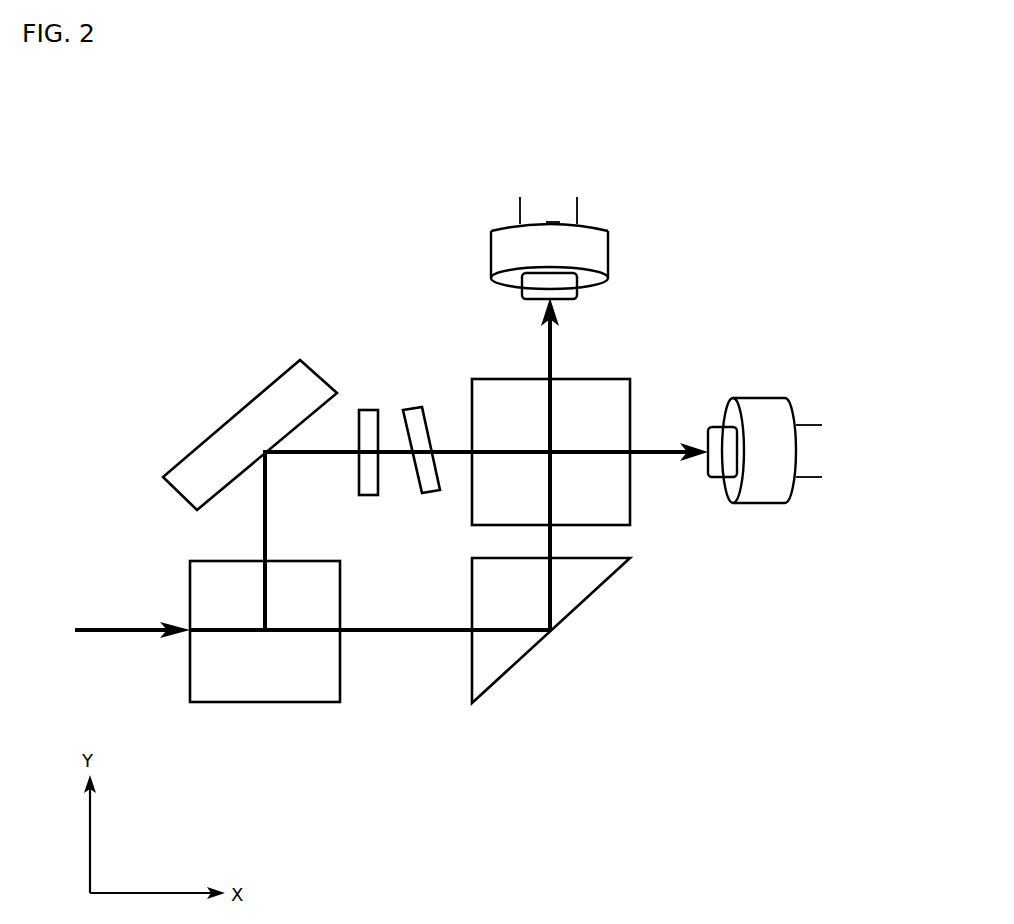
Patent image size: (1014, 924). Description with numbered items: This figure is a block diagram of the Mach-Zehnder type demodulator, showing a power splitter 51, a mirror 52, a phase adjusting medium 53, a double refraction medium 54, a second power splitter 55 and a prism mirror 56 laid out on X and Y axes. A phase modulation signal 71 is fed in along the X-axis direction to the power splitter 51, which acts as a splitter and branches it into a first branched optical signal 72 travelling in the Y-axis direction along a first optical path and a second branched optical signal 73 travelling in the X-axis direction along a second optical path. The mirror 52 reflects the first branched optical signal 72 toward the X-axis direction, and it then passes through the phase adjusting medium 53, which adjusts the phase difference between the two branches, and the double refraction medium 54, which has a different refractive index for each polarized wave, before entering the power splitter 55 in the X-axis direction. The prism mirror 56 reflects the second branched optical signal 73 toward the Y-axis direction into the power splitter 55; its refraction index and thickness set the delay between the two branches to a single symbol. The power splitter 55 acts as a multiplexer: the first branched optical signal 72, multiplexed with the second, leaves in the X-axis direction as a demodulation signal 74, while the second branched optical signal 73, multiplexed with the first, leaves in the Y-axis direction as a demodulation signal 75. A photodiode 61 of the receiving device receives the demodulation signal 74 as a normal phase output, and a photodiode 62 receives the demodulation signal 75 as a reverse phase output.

The power splitter 51 is at (189, 580).
The mirror 52 is at (226, 418).
The phase adjusting medium 53 is at (370, 410).
The double refraction medium 54 is at (428, 412).
The power splitter 55 is at (605, 379).
The prism mirror 56 is at (573, 612).
The photodiode 61 is at (762, 503).
The photodiode 62 is at (608, 250).
The phase modulation signal 71 is at (120, 633).
The first branched optical signal 72 is at (262, 513).
The second branched optical signal 73 is at (413, 633).
The demodulation signal 74 is at (655, 455).
The demodulation signal 75 is at (548, 345).